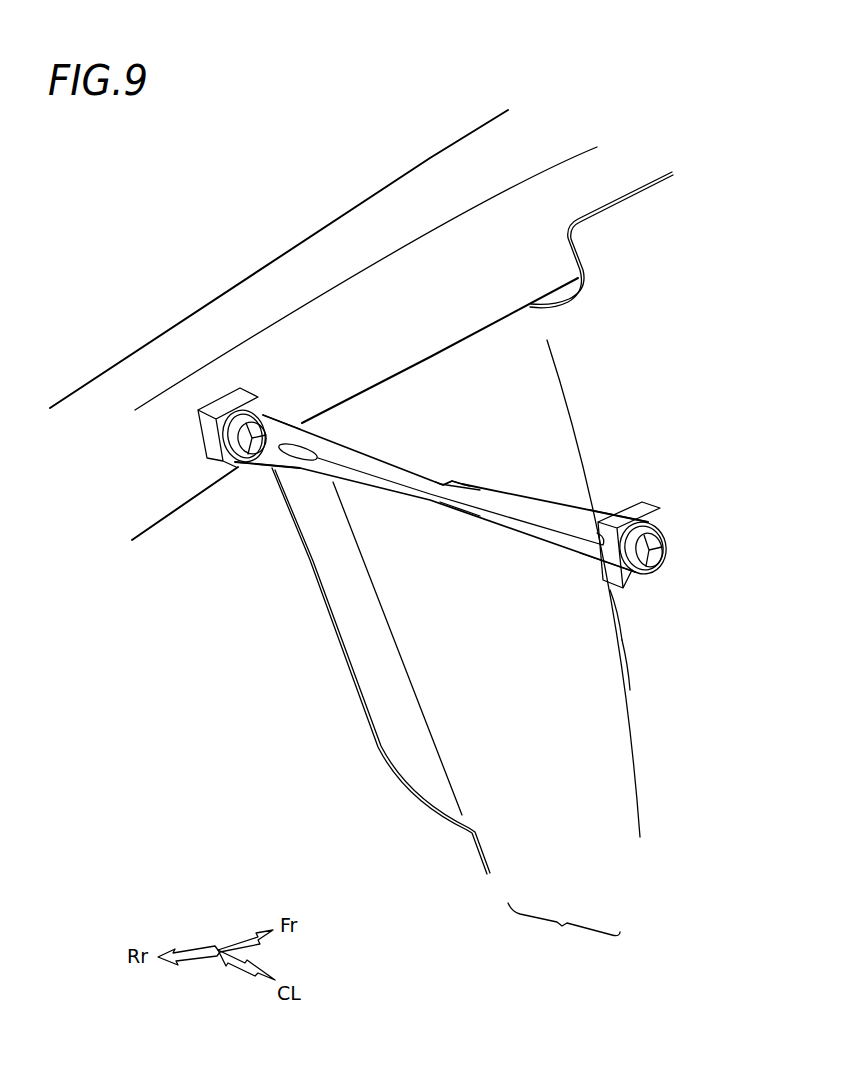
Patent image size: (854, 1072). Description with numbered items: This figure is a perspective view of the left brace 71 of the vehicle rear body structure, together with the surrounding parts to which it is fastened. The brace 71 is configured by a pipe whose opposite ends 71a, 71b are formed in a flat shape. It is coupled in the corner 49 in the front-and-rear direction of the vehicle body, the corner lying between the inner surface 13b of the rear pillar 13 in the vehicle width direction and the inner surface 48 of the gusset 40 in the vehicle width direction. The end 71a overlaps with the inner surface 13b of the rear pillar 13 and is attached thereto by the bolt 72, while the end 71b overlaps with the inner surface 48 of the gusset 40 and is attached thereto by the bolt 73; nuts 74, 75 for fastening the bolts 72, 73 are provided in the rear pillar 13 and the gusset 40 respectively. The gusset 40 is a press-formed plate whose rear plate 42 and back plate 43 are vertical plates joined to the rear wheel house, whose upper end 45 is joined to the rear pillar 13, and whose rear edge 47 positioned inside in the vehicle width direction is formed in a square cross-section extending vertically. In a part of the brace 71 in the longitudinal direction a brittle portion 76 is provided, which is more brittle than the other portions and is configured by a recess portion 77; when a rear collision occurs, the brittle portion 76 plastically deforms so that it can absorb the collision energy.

The rear pillar 13 is at (145, 368).
The inner surface of rear pillar 13b is at (221, 375).
The gusset 40 is at (564, 932).
The rear plate 42 is at (557, 793).
The back plate 43 is at (678, 760).
The upper end of gusset 45 is at (638, 228).
The rear edge of gusset 47 is at (617, 618).
The inner surface of gusset 48 is at (651, 660).
The corner 49 is at (505, 353).
The brace 71 is at (530, 505).
The end of brace 71a is at (267, 465).
The end of brace 71b is at (617, 517).
The bolt 72 is at (242, 473).
The bolt 73 is at (663, 543).
The nut 74 is at (202, 447).
The nut 75 is at (668, 560).
The brittle portion 76 is at (457, 473).
The recess portion 77 is at (445, 482).